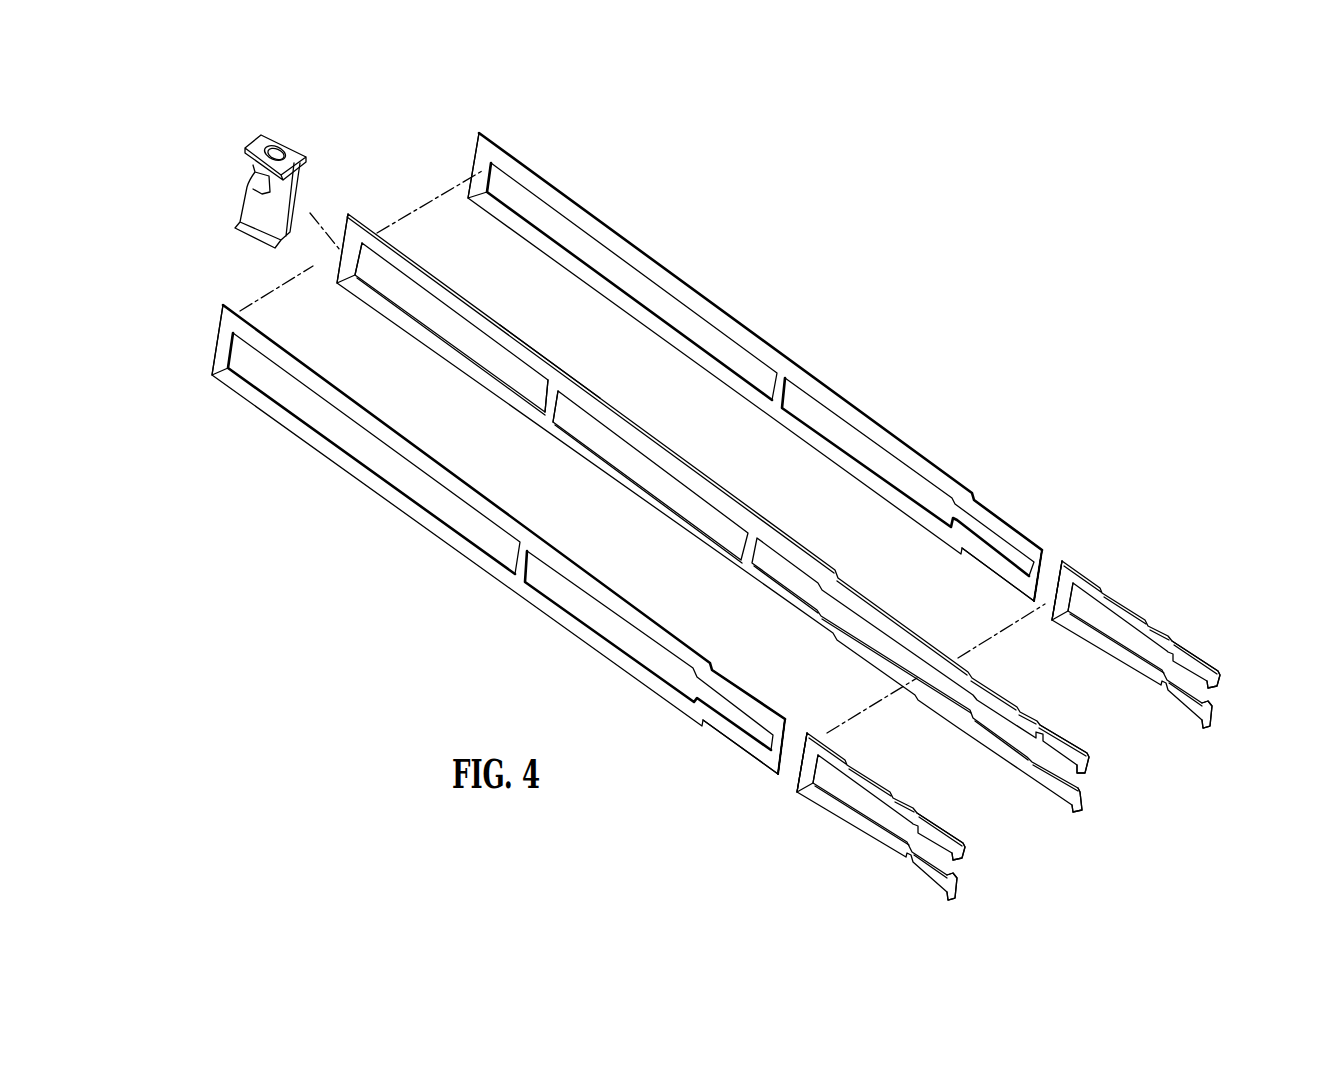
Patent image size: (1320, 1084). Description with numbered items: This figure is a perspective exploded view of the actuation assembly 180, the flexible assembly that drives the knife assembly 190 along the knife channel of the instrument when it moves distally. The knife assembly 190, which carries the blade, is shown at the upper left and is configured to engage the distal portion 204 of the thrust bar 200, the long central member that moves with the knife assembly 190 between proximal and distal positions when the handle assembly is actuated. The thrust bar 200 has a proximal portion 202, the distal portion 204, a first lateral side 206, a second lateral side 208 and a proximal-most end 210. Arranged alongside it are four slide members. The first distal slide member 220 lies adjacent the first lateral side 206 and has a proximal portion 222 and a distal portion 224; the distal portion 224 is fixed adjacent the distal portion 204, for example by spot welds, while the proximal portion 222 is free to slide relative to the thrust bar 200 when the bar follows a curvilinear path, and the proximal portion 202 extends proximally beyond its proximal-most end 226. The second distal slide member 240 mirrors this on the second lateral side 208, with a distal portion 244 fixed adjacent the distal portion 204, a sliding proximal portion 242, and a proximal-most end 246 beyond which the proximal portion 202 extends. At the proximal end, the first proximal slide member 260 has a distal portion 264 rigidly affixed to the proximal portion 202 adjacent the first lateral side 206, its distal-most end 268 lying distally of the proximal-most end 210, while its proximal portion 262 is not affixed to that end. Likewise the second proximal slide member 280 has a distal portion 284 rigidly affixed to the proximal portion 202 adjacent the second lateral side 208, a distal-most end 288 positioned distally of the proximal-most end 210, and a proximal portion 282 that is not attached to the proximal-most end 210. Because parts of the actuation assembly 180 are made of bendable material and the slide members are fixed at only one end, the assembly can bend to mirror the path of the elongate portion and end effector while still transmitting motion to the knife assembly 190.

The actuation assembly 180 is at (1001, 257).
The knife assembly 190 is at (309, 148).
The thrust bar 200 is at (756, 507).
The proximal portion of thrust bar 202 is at (1112, 757).
The distal portion of thrust bar 204 is at (366, 210).
The first lateral side of thrust bar 206 is at (545, 357).
The second lateral side of thrust bar 208 is at (547, 423).
The proximal-most end of thrust bar 210 is at (1083, 807).
The first distal slide member 220 is at (783, 361).
The proximal portion of first distal slide member 222 is at (1013, 506).
The distal portion of first distal slide member 224 is at (547, 152).
The proximal-most end of first distal slide member 226 is at (1043, 557).
The second distal slide member 240 is at (467, 554).
The proximal portion of second distal slide member 242 is at (713, 749).
The distal portion of second distal slide member 244 is at (206, 389).
The proximal-most end of second distal slide member 246 is at (783, 777).
The first proximal slide member 260 is at (1156, 629).
The proximal portion of first proximal slide member 262 is at (1227, 677).
The distal portion of first proximal slide member 264 is at (1101, 575).
The distal-most end of first proximal slide member 268 is at (1046, 614).
The second proximal slide member 280 is at (850, 806).
The proximal portion of second proximal slide member 282 is at (916, 891).
The distal portion of second proximal slide member 284 is at (797, 806).
The distal-most end of second proximal slide member 288 is at (797, 733).